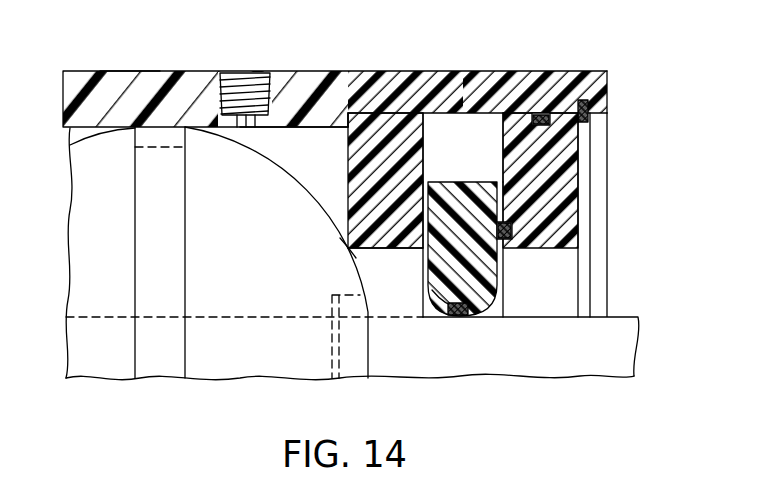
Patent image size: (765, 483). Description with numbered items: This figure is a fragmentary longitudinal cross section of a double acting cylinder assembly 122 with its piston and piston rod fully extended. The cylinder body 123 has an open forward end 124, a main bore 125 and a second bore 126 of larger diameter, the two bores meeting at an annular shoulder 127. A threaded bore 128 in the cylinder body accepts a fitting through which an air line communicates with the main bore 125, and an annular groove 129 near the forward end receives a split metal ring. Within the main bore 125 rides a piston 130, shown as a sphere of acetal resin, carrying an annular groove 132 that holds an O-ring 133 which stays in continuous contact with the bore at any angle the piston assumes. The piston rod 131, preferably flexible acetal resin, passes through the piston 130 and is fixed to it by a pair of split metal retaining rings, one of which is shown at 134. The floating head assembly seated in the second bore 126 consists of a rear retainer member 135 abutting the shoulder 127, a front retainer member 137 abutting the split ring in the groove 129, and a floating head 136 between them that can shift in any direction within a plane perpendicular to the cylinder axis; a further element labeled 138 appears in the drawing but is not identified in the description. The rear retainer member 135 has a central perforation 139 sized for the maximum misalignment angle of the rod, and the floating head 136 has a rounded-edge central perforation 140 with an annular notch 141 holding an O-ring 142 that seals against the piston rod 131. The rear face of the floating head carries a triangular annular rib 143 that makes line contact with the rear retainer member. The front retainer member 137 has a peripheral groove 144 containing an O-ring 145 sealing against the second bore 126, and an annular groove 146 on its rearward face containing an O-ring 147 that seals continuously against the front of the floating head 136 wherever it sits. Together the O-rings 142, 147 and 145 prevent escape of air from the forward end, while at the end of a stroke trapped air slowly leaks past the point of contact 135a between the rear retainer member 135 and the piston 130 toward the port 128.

The cylinder assembly 122 is at (316, 66).
The cylinder body 123 is at (122, 71).
The open forward end 124 is at (593, 113).
The main bore 125 is at (270, 128).
The second bore 126 is at (440, 113).
The annular shoulder 127 is at (346, 118).
The threaded bore 128 is at (227, 72).
The annular groove 129 is at (607, 88).
The piston 130 is at (258, 303).
The piston rod 131 is at (517, 355).
The annular groove 132 is at (185, 277).
The O-ring 133 is at (173, 182).
The split metal retaining ring 134 is at (339, 347).
The rear retainer member 135 is at (375, 238).
The point of contact 135a is at (348, 247).
The floating head 136 is at (490, 182).
The front retainer member 137 is at (560, 247).
The annular gap 138 is at (583, 125).
The central perforation 139 is at (368, 284).
The central perforation 140 is at (432, 313).
The annular notch 141 is at (478, 299).
The O-ring 142 is at (460, 318).
The annular rib 143 is at (430, 180).
The peripheral groove 144 is at (537, 124).
The O-ring 145 is at (540, 118).
The annular groove 146 is at (512, 232).
The O-ring 147 is at (505, 240).